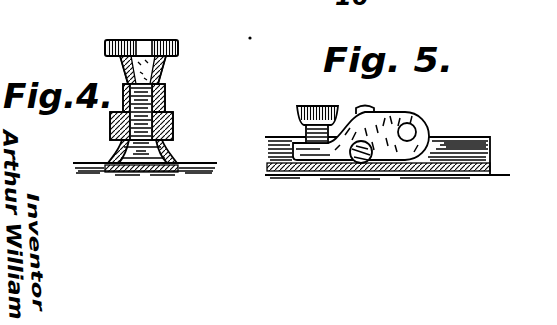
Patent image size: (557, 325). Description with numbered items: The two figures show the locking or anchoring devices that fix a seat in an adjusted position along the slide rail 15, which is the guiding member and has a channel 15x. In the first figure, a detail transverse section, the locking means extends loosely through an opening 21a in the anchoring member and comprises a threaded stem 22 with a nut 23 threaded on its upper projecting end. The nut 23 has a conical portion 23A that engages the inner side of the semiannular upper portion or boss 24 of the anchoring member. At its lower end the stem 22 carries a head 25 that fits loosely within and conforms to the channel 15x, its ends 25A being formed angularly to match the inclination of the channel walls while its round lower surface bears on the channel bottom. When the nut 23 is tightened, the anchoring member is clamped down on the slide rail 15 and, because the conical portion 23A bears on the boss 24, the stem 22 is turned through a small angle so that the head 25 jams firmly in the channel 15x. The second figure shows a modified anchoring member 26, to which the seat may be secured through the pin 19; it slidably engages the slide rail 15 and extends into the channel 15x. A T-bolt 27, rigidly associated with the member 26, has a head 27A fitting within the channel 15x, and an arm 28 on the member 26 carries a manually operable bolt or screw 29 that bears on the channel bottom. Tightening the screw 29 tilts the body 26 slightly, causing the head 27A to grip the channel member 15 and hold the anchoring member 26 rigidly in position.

In FIG. 4, the nut 23 is at (152, 42).
In FIG. 4, the conical portion 23A is at (160, 70).
In FIG. 4, the semiannular upper portion or boss 24 is at (164, 88).
In FIG. 4, the opening 21a is at (123, 87).
In FIG. 4, the threaded stem 22 is at (143, 117).
In FIG. 4, the ends of head 25A is at (110, 160).
In FIG. 4, the head 25 is at (143, 156).
In FIG. 4, the guiding member or slide rail 15 is at (110, 165).
In FIG. 5, the guiding member or slide rail 15 is at (477, 172).
In FIG. 4, the channel 15x is at (170, 172).
In FIG. 5, the channel 15x is at (477, 145).
In FIG. 5, the anchoring member 26 is at (393, 123).
In FIG. 5, the arm 28 is at (343, 147).
In FIG. 5, the pin 19 is at (419, 128).
In FIG. 5, the head of T-bolt 27A is at (367, 163).
In FIG. 5, the T-bolt 27 is at (360, 108).
In FIG. 5, the manually operable bolt or screw 29 is at (303, 128).